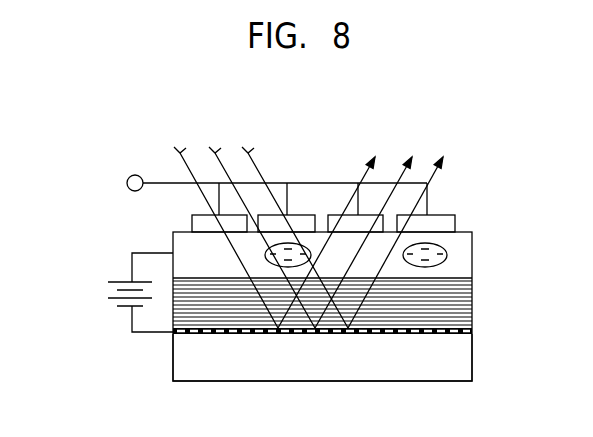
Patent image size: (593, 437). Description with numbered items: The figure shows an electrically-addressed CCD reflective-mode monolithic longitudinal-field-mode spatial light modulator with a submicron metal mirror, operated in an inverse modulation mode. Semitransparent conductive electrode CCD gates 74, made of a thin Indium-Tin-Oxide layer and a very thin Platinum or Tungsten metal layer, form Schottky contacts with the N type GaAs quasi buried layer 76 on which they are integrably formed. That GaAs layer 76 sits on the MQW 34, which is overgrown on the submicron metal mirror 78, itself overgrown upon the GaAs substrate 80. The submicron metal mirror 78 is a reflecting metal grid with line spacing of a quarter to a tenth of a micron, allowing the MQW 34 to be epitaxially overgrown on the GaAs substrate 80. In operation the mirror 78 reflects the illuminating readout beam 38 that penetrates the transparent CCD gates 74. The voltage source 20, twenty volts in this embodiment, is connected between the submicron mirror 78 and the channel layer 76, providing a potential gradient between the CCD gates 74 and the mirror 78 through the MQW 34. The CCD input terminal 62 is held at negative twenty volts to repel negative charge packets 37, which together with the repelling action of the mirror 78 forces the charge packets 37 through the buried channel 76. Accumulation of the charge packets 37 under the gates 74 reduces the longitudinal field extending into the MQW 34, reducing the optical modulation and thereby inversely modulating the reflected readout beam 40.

The voltage source 20 is at (122, 282).
The MQW 34 is at (472, 301).
The negative charge packets 37 is at (447, 254).
The illuminating readout beam 38 is at (222, 165).
The reflected readout beam 40 is at (400, 172).
The CCD input terminal 62 is at (163, 183).
The CCD gates 74 is at (453, 215).
The GaAs quasi buried layer 76 is at (472, 268).
The submicron metal mirror 78 is at (472, 332).
The GaAs substrate 80 is at (472, 360).